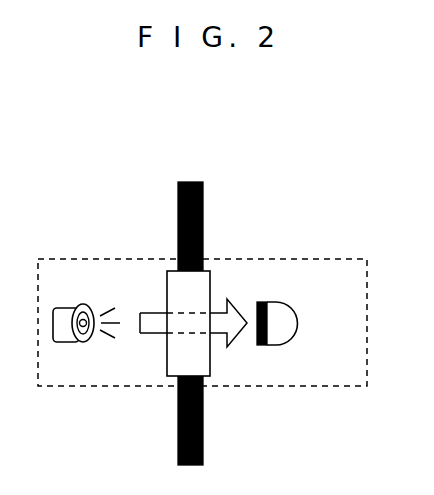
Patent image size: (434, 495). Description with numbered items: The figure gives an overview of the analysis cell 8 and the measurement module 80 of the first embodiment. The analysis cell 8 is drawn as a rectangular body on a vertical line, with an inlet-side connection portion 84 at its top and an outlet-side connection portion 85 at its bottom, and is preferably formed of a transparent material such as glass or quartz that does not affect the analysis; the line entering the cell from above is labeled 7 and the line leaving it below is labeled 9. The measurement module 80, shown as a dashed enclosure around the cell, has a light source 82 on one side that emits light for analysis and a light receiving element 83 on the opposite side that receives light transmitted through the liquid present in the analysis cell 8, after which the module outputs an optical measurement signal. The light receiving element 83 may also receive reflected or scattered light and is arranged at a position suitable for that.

The upper transport shaft 7 is at (203, 200).
The lower transport shaft 9 is at (203, 435).
The analysis cell 8 is at (166, 366).
The measurement module 80 is at (310, 260).
The light source 82 is at (78, 306).
The light receiving element 83 is at (297, 325).
The inlet-side connection portion 84 is at (205, 258).
The outlet-side connection portion 85 is at (204, 380).